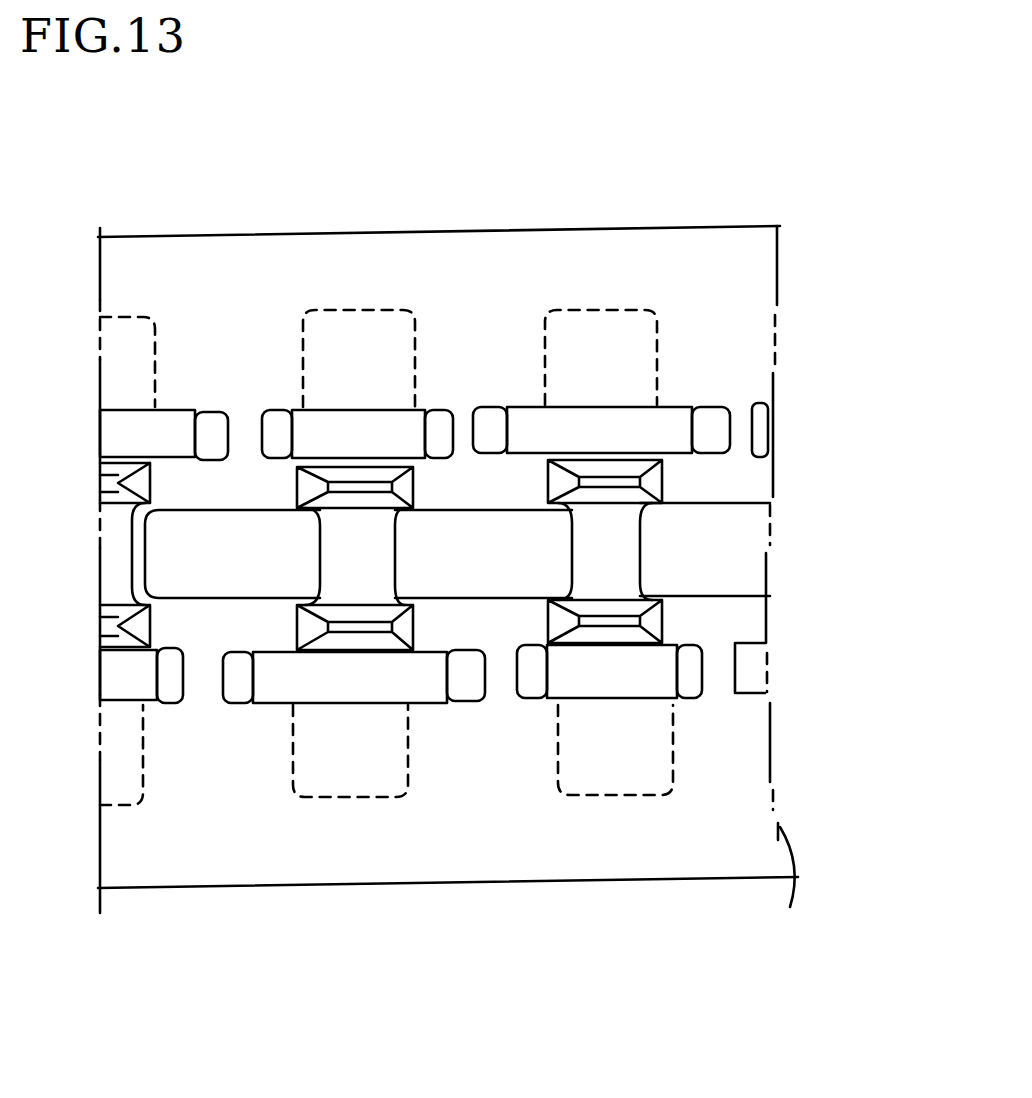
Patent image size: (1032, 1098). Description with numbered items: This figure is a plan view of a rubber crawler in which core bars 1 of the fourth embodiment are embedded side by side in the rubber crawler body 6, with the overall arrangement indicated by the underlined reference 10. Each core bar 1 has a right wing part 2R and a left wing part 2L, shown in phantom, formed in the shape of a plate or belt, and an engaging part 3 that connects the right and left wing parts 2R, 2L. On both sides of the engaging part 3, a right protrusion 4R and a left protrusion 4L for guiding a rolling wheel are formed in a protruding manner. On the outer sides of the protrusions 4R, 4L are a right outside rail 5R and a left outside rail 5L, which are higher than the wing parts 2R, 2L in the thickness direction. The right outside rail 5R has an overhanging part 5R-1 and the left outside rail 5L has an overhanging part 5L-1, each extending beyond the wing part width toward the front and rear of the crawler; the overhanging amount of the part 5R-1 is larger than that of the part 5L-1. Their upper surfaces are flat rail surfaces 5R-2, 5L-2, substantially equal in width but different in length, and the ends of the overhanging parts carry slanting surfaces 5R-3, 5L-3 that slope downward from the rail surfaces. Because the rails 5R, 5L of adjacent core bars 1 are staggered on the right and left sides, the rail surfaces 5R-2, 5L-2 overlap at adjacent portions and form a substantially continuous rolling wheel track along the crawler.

The core bar 1 is at (630, 310).
The right wing part 2R is at (660, 347).
The left wing part 2L is at (673, 783).
The engaging part 3 is at (627, 553).
The right protrusion 4R is at (663, 478).
The left protrusion 4L is at (663, 615).
The right outside rail 5R is at (679, 296).
The overhanging part of right outside rail 5R-1 is at (263, 410).
The rail surface of right outside rail 5R-2 is at (578, 427).
The slanting surface of right overhanging part 5R-3 is at (483, 407).
The left outside rail 5L is at (701, 797).
The overhanging part of left outside rail 5L-1 is at (228, 703).
The rail surface of left outside rail 5L-2 is at (597, 682).
The slanting surface of left overhanging part 5L-3 is at (527, 700).
The rubber crawler body 6 is at (720, 250).
The roller unit 10 is at (497, 580).